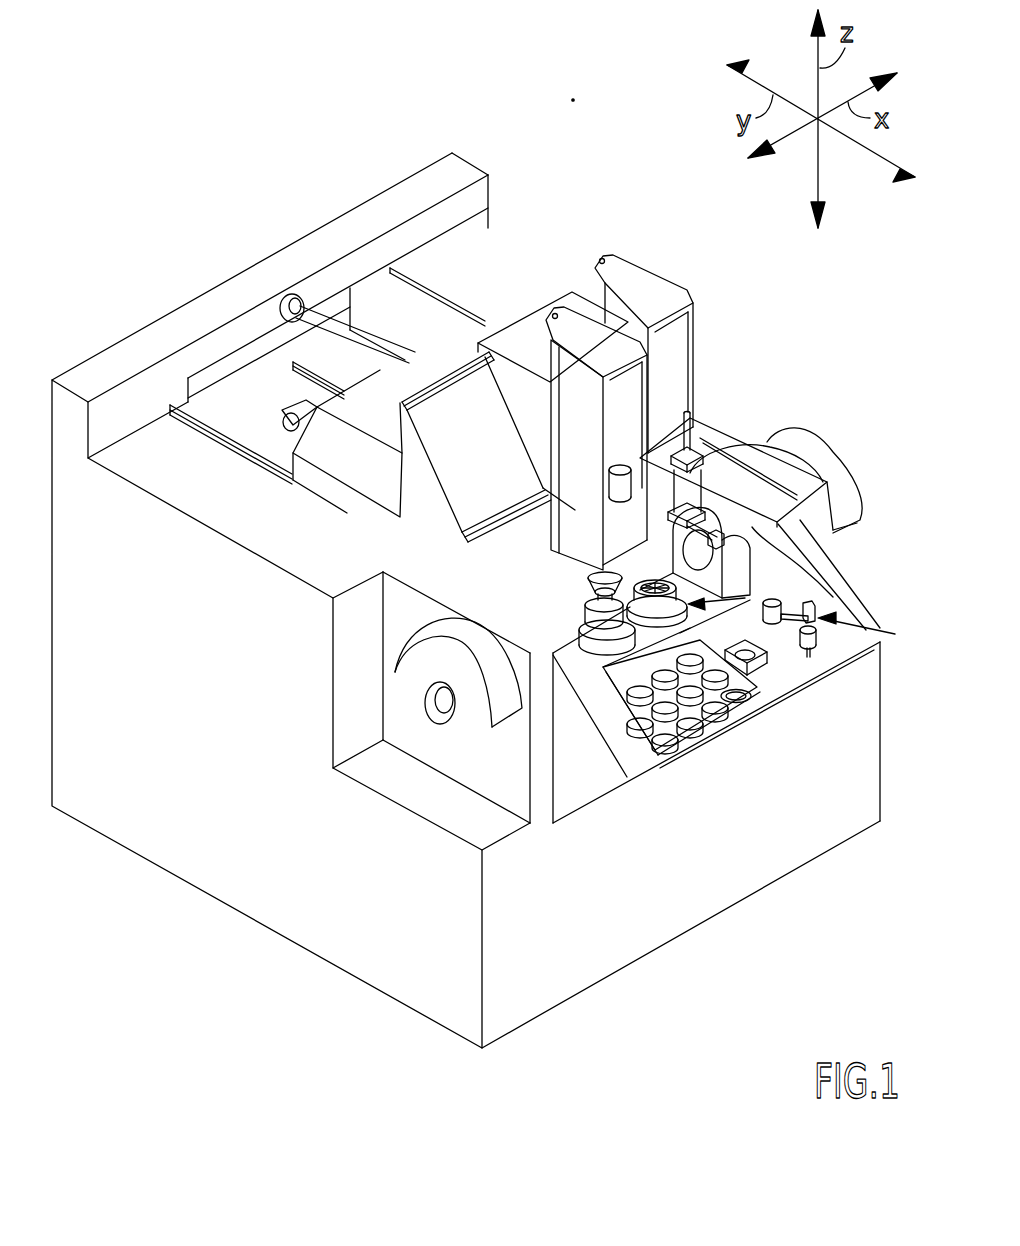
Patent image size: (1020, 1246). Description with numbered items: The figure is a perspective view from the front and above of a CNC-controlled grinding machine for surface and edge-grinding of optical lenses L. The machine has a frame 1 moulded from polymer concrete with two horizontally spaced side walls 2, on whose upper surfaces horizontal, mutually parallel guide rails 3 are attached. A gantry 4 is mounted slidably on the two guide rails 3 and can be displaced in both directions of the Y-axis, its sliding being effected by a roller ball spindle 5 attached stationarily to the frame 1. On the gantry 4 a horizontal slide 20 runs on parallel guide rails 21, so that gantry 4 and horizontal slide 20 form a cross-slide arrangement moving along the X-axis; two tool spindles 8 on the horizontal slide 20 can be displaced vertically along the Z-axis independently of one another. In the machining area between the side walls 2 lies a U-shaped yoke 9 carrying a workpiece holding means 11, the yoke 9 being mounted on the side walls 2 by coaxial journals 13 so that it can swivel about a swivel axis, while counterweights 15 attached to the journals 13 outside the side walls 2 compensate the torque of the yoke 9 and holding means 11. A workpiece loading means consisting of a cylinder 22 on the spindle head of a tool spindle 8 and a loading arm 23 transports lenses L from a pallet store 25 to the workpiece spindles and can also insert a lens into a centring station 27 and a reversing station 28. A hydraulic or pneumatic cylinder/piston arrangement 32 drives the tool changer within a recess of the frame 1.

The frame 1 is at (253, 880).
The side walls 2 is at (400, 607).
The guide rails 3 is at (152, 485).
The gantry 4 is at (343, 455).
The roller ball spindle 5 is at (312, 320).
The tool spindles 8 is at (692, 497).
The U-shaped yoke 9 is at (762, 578).
The workpiece holding means 11 is at (767, 650).
The journals 13 is at (443, 703).
The counterweights 15 is at (795, 438).
The horizontal slide 20 is at (552, 310).
The guide rails 21 is at (452, 388).
The cylinder 22 is at (692, 510).
The loading arm 23 is at (829, 486).
The pallet store 25 is at (733, 705).
The centring station 27 is at (752, 625).
The reversing station 28 is at (874, 634).
The cylinder/piston arrangement 32 is at (275, 415).
The optical lenses L is at (690, 722).